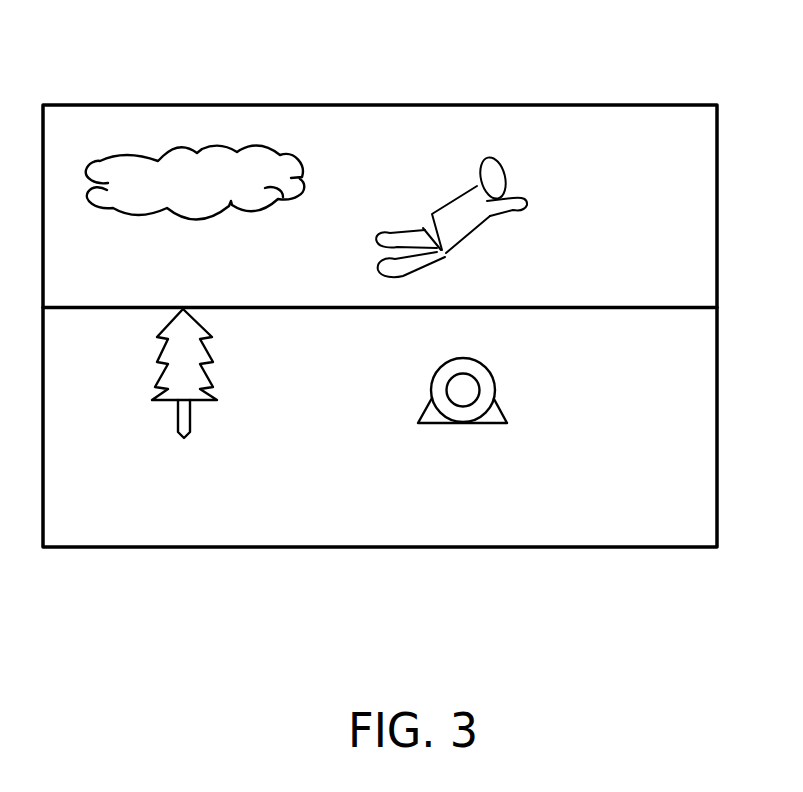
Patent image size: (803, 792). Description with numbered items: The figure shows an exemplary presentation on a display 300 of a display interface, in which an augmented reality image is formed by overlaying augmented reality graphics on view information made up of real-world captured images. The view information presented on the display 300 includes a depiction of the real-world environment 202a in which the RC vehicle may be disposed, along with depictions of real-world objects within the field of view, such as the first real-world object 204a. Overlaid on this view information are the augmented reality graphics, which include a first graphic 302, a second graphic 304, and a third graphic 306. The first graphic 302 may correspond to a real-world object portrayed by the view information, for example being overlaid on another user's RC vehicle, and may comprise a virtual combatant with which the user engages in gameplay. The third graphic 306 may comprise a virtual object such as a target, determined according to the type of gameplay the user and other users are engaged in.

The display 300 is at (360, 105).
The real-world environment 202a is at (670, 206).
The first real-world object 204a is at (205, 401).
The first graphic 302 is at (432, 215).
The second graphic 304 is at (250, 212).
The third graphic 306 is at (503, 410).